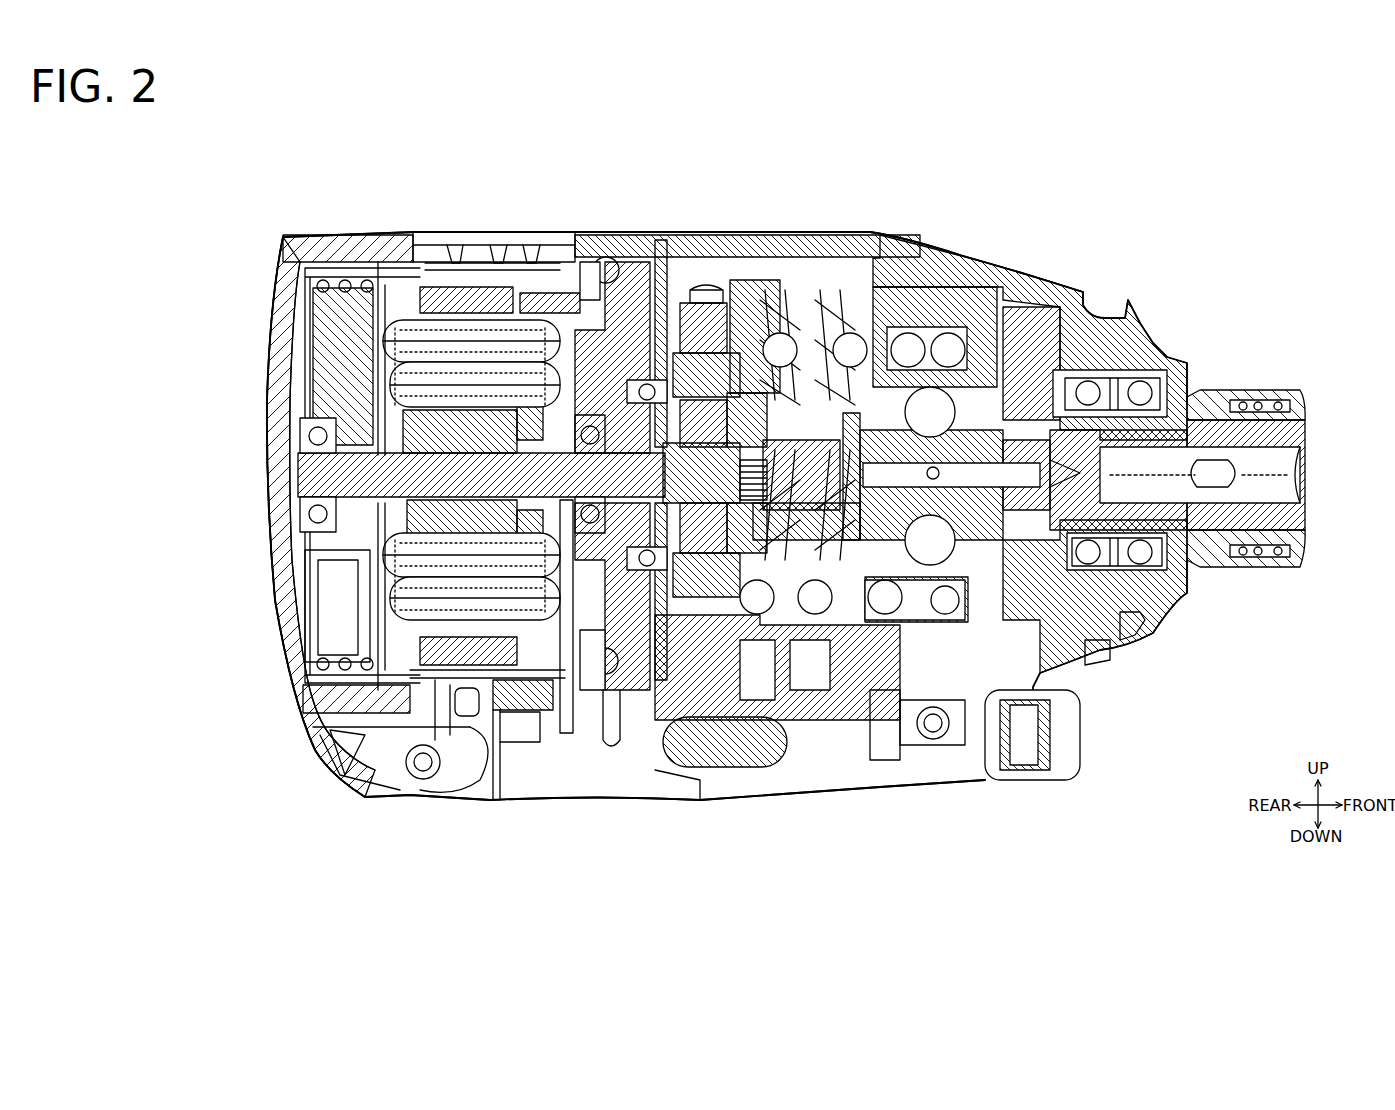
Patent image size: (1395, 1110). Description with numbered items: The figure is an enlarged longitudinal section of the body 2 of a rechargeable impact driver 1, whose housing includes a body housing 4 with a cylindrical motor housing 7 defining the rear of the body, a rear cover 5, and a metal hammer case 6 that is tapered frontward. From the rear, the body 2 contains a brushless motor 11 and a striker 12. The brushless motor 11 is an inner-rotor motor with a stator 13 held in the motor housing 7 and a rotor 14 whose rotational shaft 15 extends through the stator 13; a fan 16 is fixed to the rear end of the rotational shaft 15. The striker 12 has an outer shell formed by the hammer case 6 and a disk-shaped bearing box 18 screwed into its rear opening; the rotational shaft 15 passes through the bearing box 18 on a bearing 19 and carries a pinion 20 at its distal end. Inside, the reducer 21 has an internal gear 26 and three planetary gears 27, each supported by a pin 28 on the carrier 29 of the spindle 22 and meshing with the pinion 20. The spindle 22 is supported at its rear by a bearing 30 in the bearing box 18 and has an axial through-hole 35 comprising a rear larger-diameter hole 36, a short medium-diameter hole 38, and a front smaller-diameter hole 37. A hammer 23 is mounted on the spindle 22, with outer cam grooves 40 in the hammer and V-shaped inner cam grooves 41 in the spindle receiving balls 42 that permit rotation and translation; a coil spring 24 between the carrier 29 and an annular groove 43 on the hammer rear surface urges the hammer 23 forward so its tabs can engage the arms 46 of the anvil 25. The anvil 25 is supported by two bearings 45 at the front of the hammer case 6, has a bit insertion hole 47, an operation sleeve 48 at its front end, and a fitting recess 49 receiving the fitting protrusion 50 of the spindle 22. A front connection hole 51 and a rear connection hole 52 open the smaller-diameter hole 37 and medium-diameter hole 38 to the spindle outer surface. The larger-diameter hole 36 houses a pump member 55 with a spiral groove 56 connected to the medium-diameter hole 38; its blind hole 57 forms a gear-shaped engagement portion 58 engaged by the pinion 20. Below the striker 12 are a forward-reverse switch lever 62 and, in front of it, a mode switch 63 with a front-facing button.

The impact driver 1 is at (1066, 170).
The body 2 is at (740, 218).
The body housing 4 is at (467, 228).
The rear cover 5 is at (286, 266).
The hammer case 6 is at (1000, 250).
The motor housing 7 is at (512, 238).
The brushless motor 11 is at (432, 298).
The striker 12 is at (853, 240).
The stator 13 is at (450, 308).
The rotor 14 is at (374, 258).
The rotational shaft 15 is at (300, 475).
The fan 16 is at (305, 335).
The bearing box 18 is at (592, 280).
The bearing 19 is at (552, 290).
The pinion 20 is at (621, 335).
The reducer 21 is at (708, 270).
The spindle 22 is at (827, 310).
The hammer 23 is at (950, 345).
The coil spring 24 is at (900, 335).
The anvil 25 is at (1173, 430).
The internal gear 26 is at (722, 290).
The planetary gears 27 is at (690, 320).
The pin 28 is at (653, 330).
The carrier 29 is at (760, 300).
The bearing 30 is at (628, 310).
The through-hole 35 is at (873, 260).
The larger-diameter hole 36 is at (783, 640).
The smaller-diameter hole 37 is at (975, 700).
The medium-diameter hole 38 is at (895, 745).
The outer cam grooves 40 is at (985, 360).
The inner cam grooves 41 is at (1010, 405).
The balls 42 is at (930, 400).
The annular groove 43 is at (872, 600).
The bearings 45 is at (1140, 388).
The arms 46 is at (1035, 330).
The bit insertion hole 47 is at (1285, 460).
The operation sleeve 48 is at (1240, 385).
The fitting recess 49 is at (1140, 610).
The fitting protrusion 50 is at (1110, 648).
The front connection hole 51 is at (1023, 337).
The rear connection hole 52 is at (858, 690).
The pump member 55 is at (790, 300).
The groove 56 is at (800, 440).
The blind hole 57 is at (745, 650).
The engagement portion 58 is at (710, 745).
The forward-reverse switch lever 62 is at (690, 765).
The mode switch 63 is at (1080, 730).